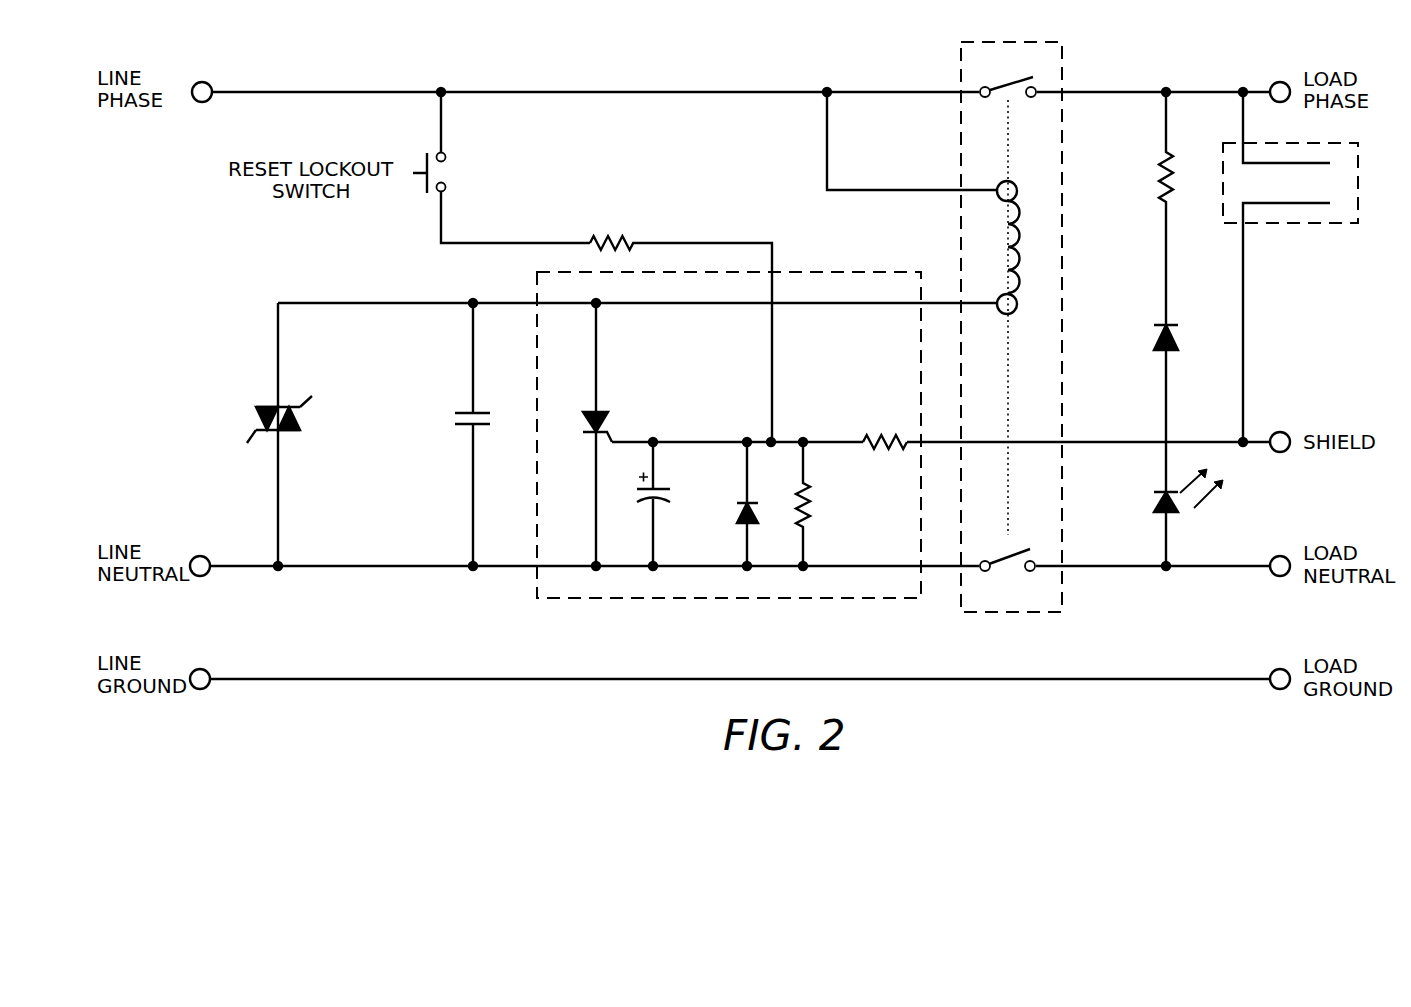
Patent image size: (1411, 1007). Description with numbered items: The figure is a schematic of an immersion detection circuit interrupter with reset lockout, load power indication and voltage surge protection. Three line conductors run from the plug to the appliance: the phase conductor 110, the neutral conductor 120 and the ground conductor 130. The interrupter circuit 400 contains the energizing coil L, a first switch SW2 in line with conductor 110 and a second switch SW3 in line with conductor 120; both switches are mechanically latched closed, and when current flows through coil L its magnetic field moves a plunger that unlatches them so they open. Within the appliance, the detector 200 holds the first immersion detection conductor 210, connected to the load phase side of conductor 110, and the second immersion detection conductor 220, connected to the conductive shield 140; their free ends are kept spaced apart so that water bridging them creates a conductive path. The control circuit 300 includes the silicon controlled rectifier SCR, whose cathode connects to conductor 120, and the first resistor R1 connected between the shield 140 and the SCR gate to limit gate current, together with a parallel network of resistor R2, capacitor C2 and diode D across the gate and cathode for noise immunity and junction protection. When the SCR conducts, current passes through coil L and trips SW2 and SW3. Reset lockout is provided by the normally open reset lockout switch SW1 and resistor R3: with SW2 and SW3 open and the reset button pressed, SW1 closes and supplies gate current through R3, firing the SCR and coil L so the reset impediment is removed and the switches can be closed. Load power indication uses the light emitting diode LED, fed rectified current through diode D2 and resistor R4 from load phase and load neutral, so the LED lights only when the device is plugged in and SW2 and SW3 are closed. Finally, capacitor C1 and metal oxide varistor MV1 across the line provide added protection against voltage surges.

The phase conductor 110 is at (296, 90).
The neutral conductor 120 is at (253, 567).
The ground conductor 130 is at (260, 680).
The conductive shield 140 is at (1138, 442).
The detector 200 is at (1298, 267).
The first immersion detection conductor 210 is at (1240, 157).
The second immersion detection conductor 220 is at (1243, 207).
The control circuit 300 is at (577, 600).
The interrupter circuit 400 is at (960, 50).
The reset lockout switch SW1 is at (444, 167).
The first switch SW2 is at (989, 88).
The second switch SW3 is at (998, 569).
The energizing coil L is at (1008, 229).
The first resistor R1 is at (906, 438).
The resistor R2 is at (825, 517).
The resistor R3 is at (627, 238).
The resistor R4 is at (1161, 183).
The capacitor C1 is at (456, 426).
The capacitor C2 is at (640, 497).
The diode D is at (740, 514).
The diode D2 is at (1176, 338).
The light emitting diode LED is at (1154, 498).
The metal oxide varistor MV1 is at (305, 434).
The silicon controlled rectifier SCR is at (628, 424).